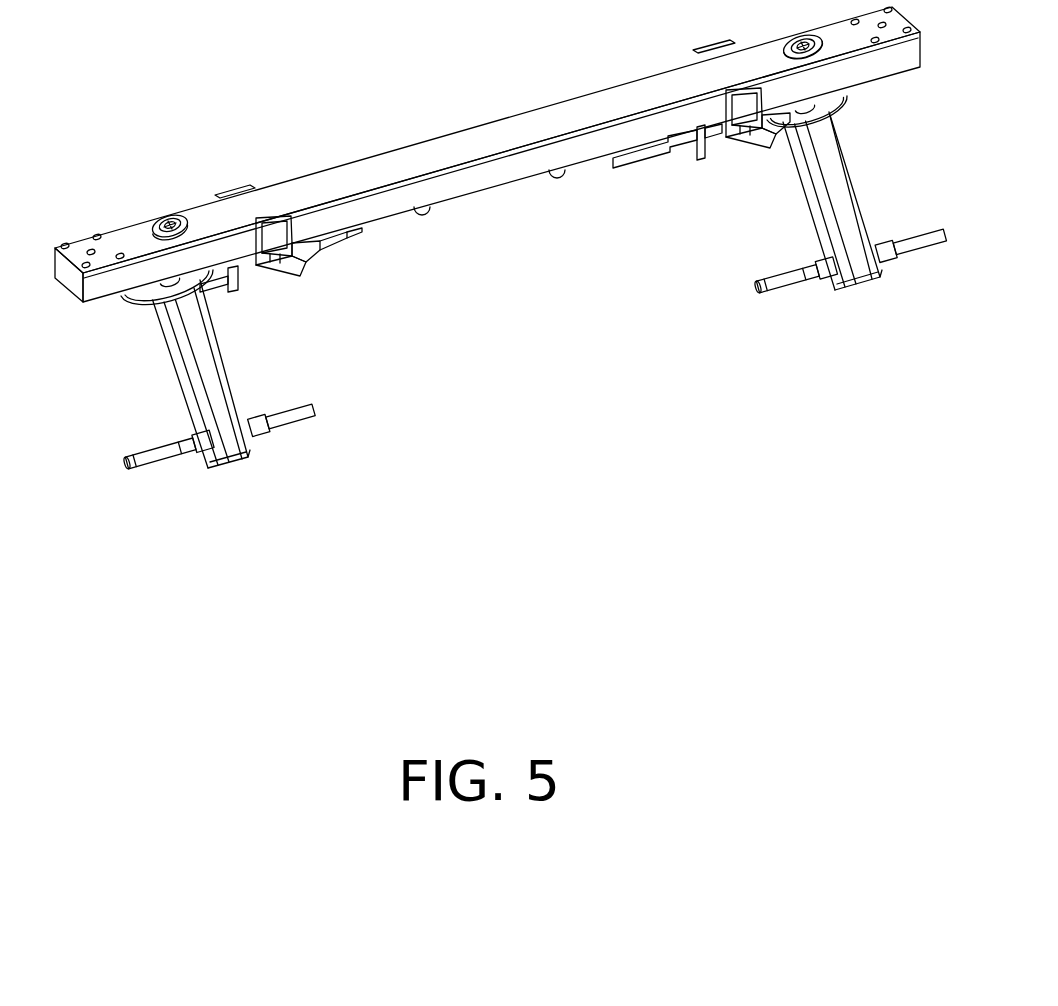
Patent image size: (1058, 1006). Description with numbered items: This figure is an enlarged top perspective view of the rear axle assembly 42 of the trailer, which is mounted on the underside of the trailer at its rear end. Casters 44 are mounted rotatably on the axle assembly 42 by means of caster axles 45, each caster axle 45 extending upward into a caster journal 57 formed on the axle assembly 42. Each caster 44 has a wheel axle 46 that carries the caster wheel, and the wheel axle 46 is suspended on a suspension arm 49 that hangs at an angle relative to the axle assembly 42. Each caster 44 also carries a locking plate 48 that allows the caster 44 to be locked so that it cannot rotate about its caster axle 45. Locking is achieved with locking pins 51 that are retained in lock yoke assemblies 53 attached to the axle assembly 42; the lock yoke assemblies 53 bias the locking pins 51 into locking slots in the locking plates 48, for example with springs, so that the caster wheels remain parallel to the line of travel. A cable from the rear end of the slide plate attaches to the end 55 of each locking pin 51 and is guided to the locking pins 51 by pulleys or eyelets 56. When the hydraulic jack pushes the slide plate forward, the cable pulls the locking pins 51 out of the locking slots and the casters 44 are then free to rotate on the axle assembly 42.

The axle assembly 42 is at (465, 127).
The caster 44 is at (200, 451).
The caster axle 45 is at (173, 213).
The wheel axle 46 is at (262, 428).
The locking plate 48 is at (133, 302).
The suspension arm 49 is at (235, 388).
The locking pin 51 is at (343, 237).
The lock yoke assembly 53 is at (310, 255).
The end of the locking pin 55 is at (352, 232).
The pulley or eyelet 56 is at (425, 222).
The caster journal 57 is at (192, 226).